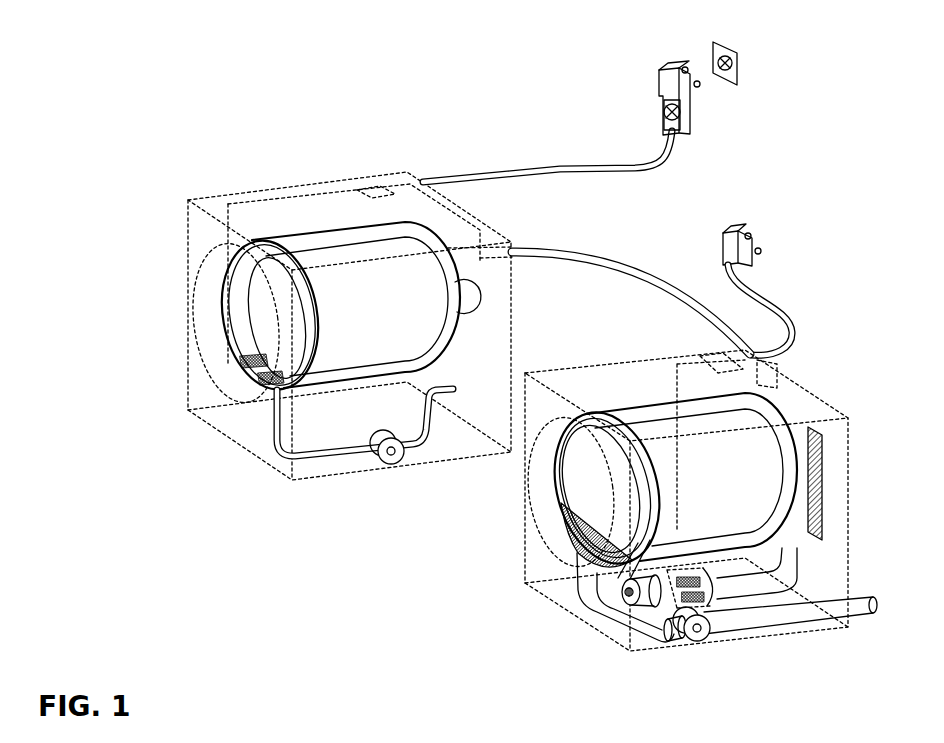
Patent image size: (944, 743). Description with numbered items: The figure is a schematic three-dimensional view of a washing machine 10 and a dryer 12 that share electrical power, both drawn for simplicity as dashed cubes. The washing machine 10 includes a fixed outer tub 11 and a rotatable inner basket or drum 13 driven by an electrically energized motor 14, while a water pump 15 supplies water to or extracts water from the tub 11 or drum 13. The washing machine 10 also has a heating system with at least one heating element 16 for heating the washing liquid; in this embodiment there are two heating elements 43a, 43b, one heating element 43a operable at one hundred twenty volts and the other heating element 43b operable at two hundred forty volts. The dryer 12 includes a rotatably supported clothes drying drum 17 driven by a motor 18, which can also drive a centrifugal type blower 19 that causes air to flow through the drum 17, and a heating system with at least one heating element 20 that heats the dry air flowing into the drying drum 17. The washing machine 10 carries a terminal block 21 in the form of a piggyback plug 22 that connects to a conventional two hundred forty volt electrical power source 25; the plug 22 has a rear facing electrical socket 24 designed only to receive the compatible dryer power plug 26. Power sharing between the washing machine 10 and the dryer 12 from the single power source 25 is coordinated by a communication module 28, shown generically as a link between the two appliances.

The washing machine 10 is at (322, 480).
The fixed outer tub 11 is at (458, 325).
The dryer 12 is at (848, 515).
The rotatable inner basket or drum 13 is at (463, 316).
The motor 14 is at (470, 283).
The water pump 15 is at (402, 457).
The heating element 16 is at (226, 379).
The clothes drying drum 17 is at (668, 402).
The motor 18 is at (622, 586).
The blower 19 is at (700, 641).
The heating element 20 is at (665, 617).
The terminal block 21 is at (721, 106).
The piggyback plug 22 is at (662, 83).
The rear facing electrical socket 24 is at (663, 112).
The electrical power source 25 is at (738, 60).
The dryer power plug 26 is at (745, 255).
The communication module 28 is at (627, 270).
The heating element 43a is at (238, 356).
The heating element 43b is at (262, 390).